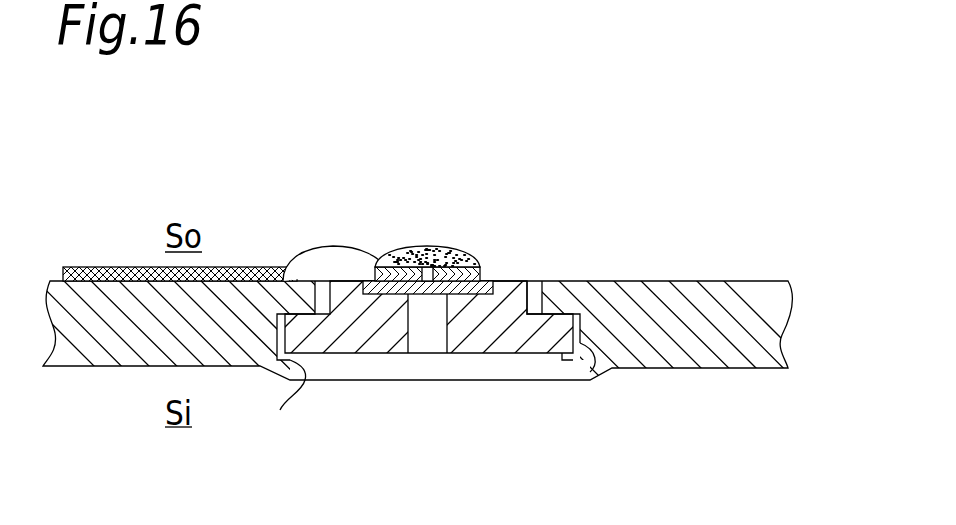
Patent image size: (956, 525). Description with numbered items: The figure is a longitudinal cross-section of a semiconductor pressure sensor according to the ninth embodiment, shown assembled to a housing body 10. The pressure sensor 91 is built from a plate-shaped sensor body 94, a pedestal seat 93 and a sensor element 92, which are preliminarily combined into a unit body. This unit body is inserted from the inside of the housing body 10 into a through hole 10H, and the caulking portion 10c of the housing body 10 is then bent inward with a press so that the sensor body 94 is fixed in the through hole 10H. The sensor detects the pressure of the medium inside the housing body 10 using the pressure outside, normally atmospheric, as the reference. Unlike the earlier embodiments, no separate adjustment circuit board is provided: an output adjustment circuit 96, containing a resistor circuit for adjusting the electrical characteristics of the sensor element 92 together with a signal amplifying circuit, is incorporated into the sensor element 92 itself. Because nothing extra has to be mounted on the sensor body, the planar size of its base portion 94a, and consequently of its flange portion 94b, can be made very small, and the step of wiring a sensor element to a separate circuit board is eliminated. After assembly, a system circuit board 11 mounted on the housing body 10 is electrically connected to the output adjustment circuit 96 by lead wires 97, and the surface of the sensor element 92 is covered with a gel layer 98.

The housing body 10 is at (146, 367).
The caulking portion 10c is at (280, 410).
The through hole 10H is at (316, 297).
The system circuit board 11 is at (124, 266).
The pressure sensor 91 is at (422, 301).
The sensor element 92 is at (421, 276).
The pedestal seat 93 is at (360, 286).
The sensor body 94 is at (422, 344).
The base portion 94a is at (538, 285).
The flange portion 94b is at (590, 372).
The output adjustment circuit 96 is at (425, 210).
The lead wires 97 is at (337, 246).
The gel layer 98 is at (442, 248).